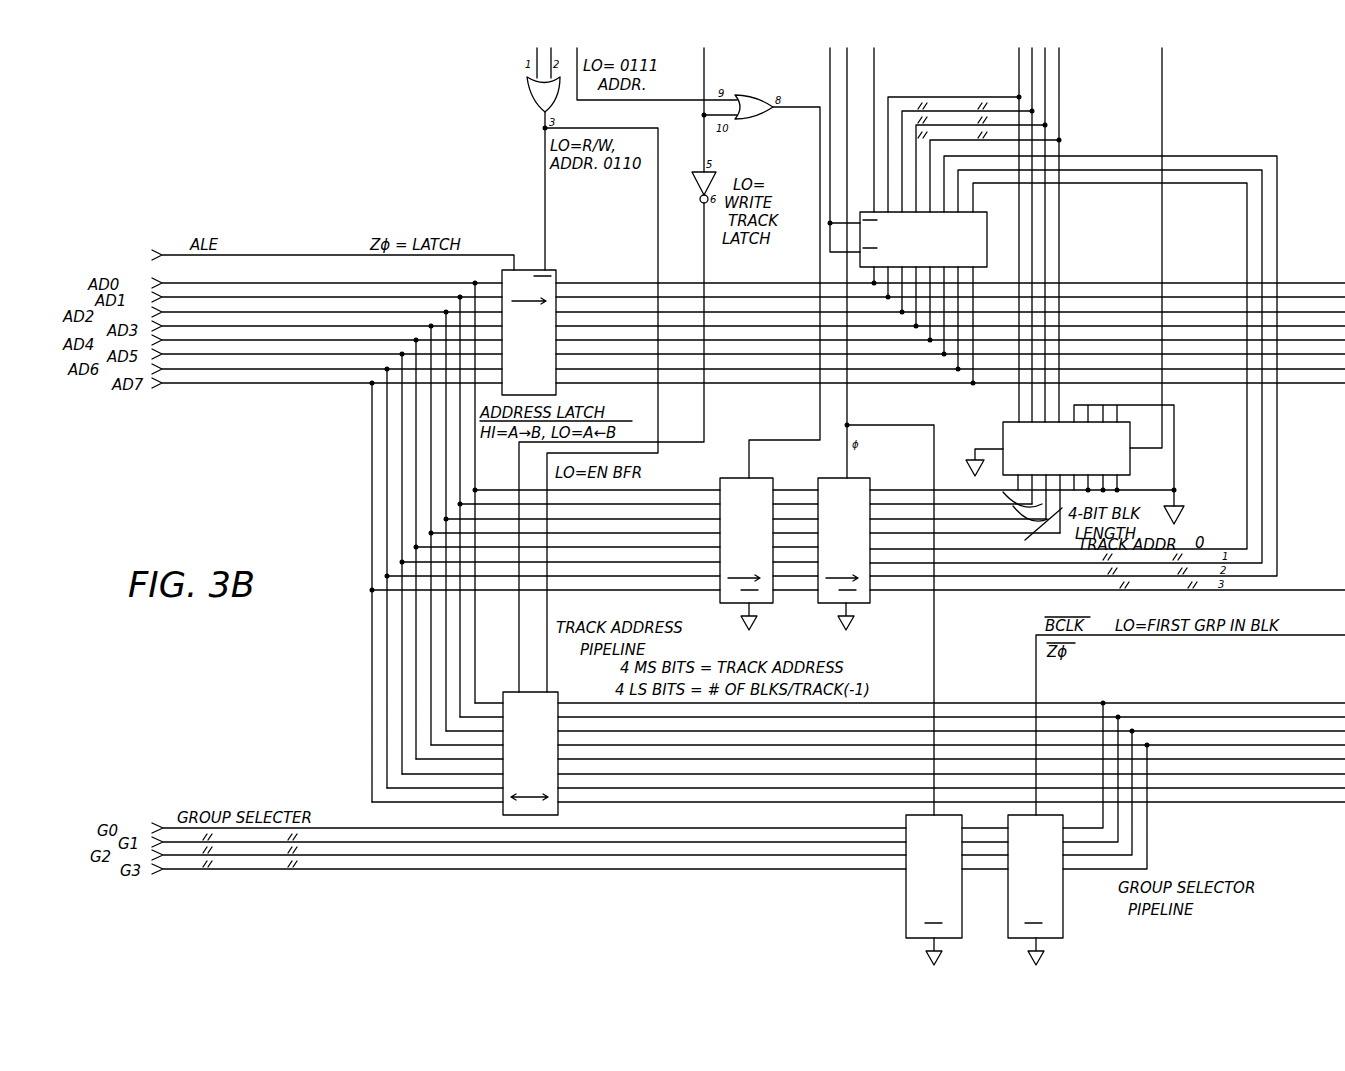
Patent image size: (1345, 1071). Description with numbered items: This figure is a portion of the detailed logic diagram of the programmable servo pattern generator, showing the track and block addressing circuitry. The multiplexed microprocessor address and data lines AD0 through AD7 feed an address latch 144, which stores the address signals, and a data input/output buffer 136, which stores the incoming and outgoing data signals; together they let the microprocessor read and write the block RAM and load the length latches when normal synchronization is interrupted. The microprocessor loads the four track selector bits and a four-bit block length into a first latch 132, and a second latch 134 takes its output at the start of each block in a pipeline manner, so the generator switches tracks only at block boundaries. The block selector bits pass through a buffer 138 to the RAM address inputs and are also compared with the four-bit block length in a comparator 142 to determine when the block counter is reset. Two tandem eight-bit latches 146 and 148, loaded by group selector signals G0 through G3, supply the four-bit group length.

The latch 132 is at (722, 478).
The second latch 134 is at (866, 478).
The buffer 136 is at (558, 812).
The buffer 138 is at (987, 238).
The comparator 142 is at (1003, 440).
The latch 144 is at (603, 250).
The latch 146 is at (906, 930).
The latch 148 is at (1050, 938).